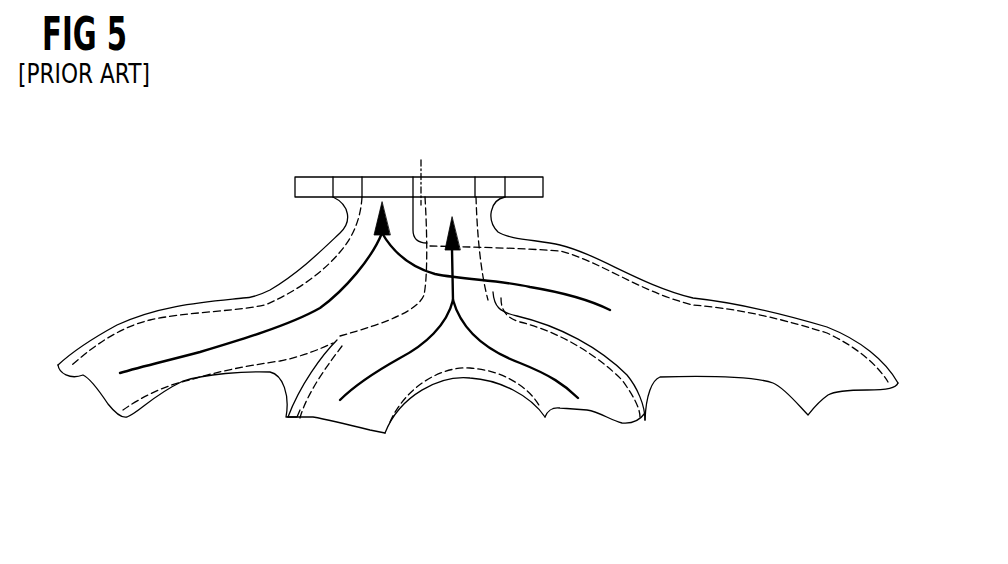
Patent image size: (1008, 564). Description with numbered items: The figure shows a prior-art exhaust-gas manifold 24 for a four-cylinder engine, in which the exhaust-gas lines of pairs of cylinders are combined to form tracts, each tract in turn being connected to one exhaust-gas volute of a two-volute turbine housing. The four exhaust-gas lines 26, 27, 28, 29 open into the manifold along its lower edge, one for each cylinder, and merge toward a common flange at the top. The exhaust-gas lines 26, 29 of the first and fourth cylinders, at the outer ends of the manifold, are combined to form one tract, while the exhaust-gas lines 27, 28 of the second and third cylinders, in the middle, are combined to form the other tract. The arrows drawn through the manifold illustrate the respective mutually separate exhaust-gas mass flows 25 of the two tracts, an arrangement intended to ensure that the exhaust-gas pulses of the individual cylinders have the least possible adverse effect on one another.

The exhaust-gas manifold 24 is at (696, 332).
The exhaust-gas mass flows 25 is at (400, 352).
The exhaust-gas line 26 is at (87, 368).
The exhaust-gas line 27 is at (313, 418).
The exhaust-gas line 28 is at (603, 400).
The exhaust-gas line 29 is at (852, 368).